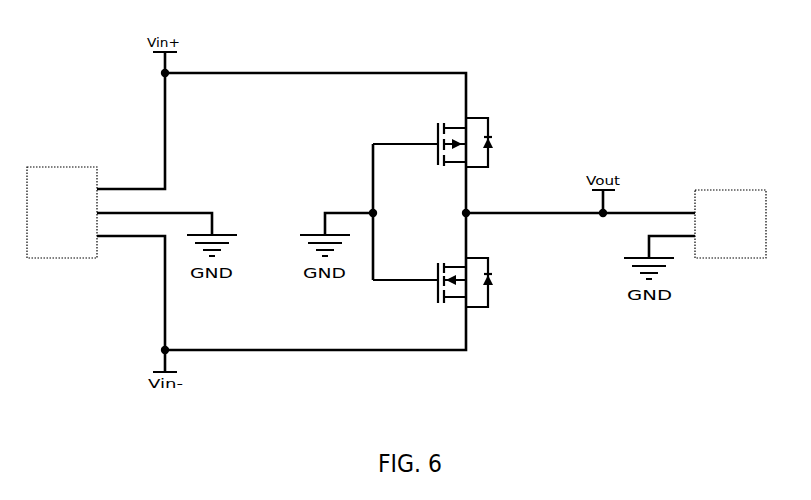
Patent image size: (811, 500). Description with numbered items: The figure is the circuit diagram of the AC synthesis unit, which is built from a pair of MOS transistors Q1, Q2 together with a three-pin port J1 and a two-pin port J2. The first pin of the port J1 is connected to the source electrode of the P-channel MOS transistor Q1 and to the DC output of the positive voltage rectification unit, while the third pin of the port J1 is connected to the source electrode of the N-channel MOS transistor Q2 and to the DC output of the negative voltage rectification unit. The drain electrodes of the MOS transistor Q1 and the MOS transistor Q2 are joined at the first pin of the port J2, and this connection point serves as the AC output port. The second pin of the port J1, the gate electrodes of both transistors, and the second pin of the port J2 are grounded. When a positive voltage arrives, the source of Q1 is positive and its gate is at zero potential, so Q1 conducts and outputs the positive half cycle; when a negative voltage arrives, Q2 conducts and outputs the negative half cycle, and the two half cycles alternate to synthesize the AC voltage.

The port J1 is at (73, 216).
The port J2 is at (742, 227).
The MOS transistor Q1 is at (444, 142).
The MOS transistor Q2 is at (444, 282).